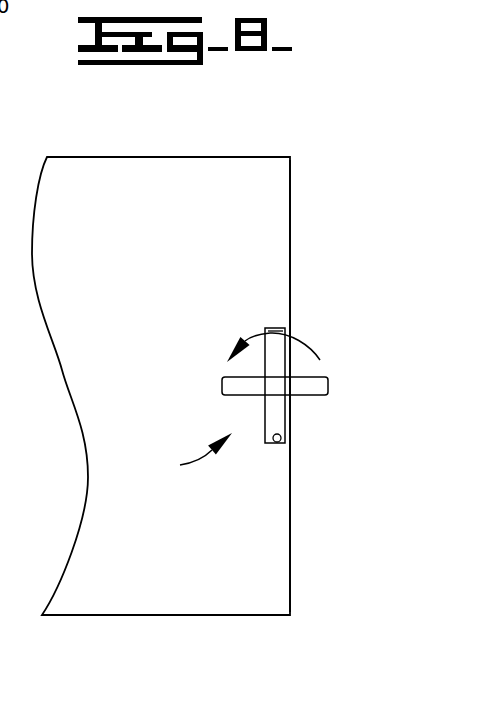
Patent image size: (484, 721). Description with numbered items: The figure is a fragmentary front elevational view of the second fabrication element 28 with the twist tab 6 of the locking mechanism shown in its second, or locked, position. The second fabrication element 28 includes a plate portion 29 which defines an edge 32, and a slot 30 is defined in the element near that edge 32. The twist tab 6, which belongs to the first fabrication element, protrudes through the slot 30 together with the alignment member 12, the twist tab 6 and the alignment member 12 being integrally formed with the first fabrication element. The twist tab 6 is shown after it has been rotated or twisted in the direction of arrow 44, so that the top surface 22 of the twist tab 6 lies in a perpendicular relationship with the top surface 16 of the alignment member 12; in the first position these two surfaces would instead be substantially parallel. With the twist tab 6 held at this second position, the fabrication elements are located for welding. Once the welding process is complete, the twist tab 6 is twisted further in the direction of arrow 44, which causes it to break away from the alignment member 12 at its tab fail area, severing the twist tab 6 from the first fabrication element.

The twist tab 6 is at (197, 456).
The alignment member 12 is at (277, 418).
The top surface of alignment member 16 is at (278, 345).
The top surface of twist tab 22 is at (226, 385).
The second fabrication element 28 is at (276, 112).
The plate portion 29 is at (207, 596).
The slot 30 is at (283, 438).
The edge 32 is at (290, 221).
The arrow 44 is at (305, 340).